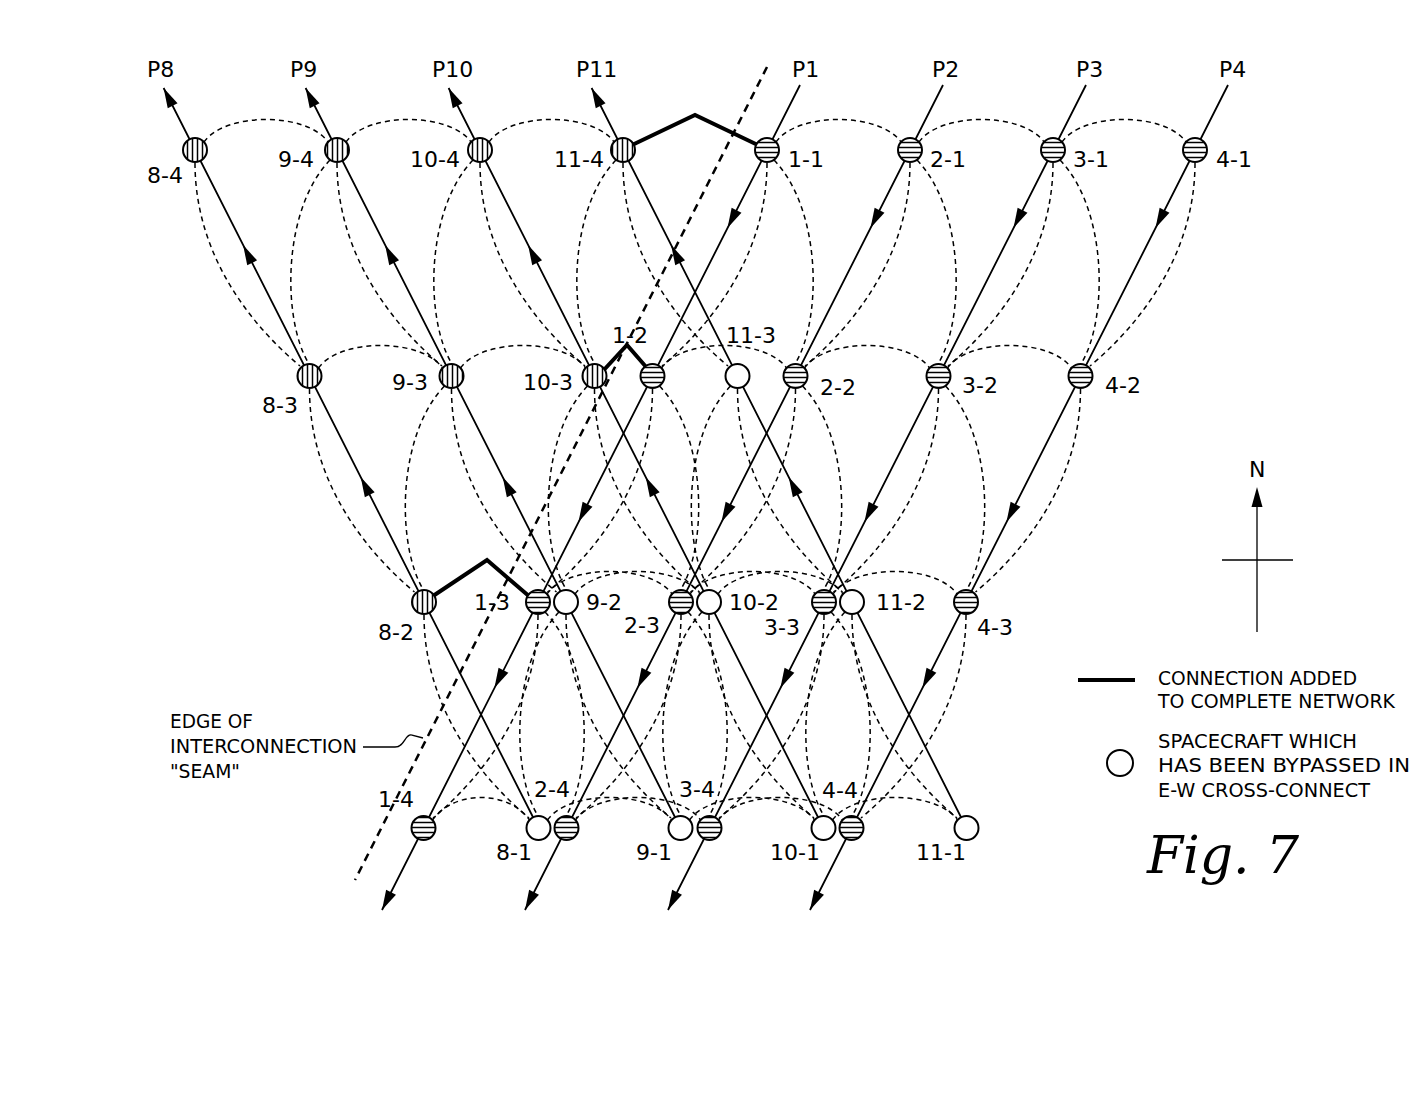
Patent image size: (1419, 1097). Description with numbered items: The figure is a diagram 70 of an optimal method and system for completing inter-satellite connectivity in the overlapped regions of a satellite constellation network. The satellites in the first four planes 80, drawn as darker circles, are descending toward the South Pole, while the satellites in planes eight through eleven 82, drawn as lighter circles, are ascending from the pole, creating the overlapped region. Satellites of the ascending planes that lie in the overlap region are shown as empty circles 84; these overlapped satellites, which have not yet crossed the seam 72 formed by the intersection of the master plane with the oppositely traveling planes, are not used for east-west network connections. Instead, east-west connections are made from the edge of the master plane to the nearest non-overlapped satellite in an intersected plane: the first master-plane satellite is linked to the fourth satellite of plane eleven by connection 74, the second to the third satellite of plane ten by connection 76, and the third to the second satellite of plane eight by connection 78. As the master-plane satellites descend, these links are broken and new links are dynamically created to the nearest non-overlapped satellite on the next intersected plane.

The diagram 70 is at (1300, 308).
The seam 72 is at (725, 150).
The connection 74 is at (688, 116).
The connection 76 is at (612, 352).
The connection 78 is at (460, 576).
The satellites in planes 1, 2, 3 and 4 80 is at (1205, 161).
The satellites in planes 8, 9, 10 and 11 82 is at (205, 138).
The overlapped satellites 84 is at (670, 827).